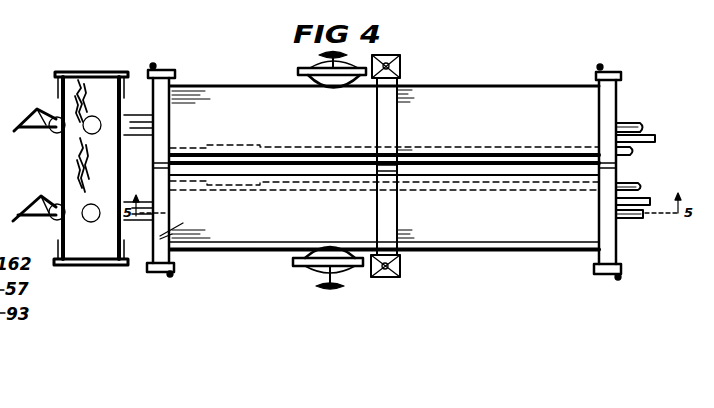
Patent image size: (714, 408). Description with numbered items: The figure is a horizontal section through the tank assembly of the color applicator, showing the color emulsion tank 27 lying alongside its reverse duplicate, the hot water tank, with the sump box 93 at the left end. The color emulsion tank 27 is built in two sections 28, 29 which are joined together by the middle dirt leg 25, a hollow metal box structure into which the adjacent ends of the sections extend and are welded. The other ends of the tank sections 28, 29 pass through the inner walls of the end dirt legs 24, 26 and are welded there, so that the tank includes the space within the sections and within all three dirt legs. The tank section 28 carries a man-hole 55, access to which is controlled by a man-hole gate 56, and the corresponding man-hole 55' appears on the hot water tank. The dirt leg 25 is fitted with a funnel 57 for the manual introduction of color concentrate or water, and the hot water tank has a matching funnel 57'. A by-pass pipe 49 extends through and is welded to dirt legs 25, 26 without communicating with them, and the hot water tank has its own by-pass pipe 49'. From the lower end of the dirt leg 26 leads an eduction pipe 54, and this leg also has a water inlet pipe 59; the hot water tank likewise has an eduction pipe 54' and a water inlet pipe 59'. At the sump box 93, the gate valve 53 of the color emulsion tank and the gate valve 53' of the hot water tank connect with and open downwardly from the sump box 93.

The sump box 93 is at (98, 252).
The gate valve 53' is at (39, 134).
The gate valve 53 is at (39, 222).
The color emulsion tank 27 is at (240, 102).
The tank section 28 is at (212, 237).
The dirt leg 24 is at (184, 227).
The tank section 29 is at (508, 230).
The dirt leg 26 is at (599, 227).
The dirt leg 25 is at (390, 222).
The funnel 57' is at (412, 64).
The funnel 57 is at (401, 284).
The man-hole 55' is at (322, 70).
The man-hole 55 is at (322, 278).
The man-hole gate 56 is at (347, 272).
The eduction pipe 54' is at (647, 114).
The water inlet pipe 59' is at (653, 128).
The by-pass pipe 49' is at (640, 157).
The by-pass pipe 49 is at (650, 177).
The water inlet pipe 59 is at (649, 193).
The eduction pipe 54 is at (641, 227).